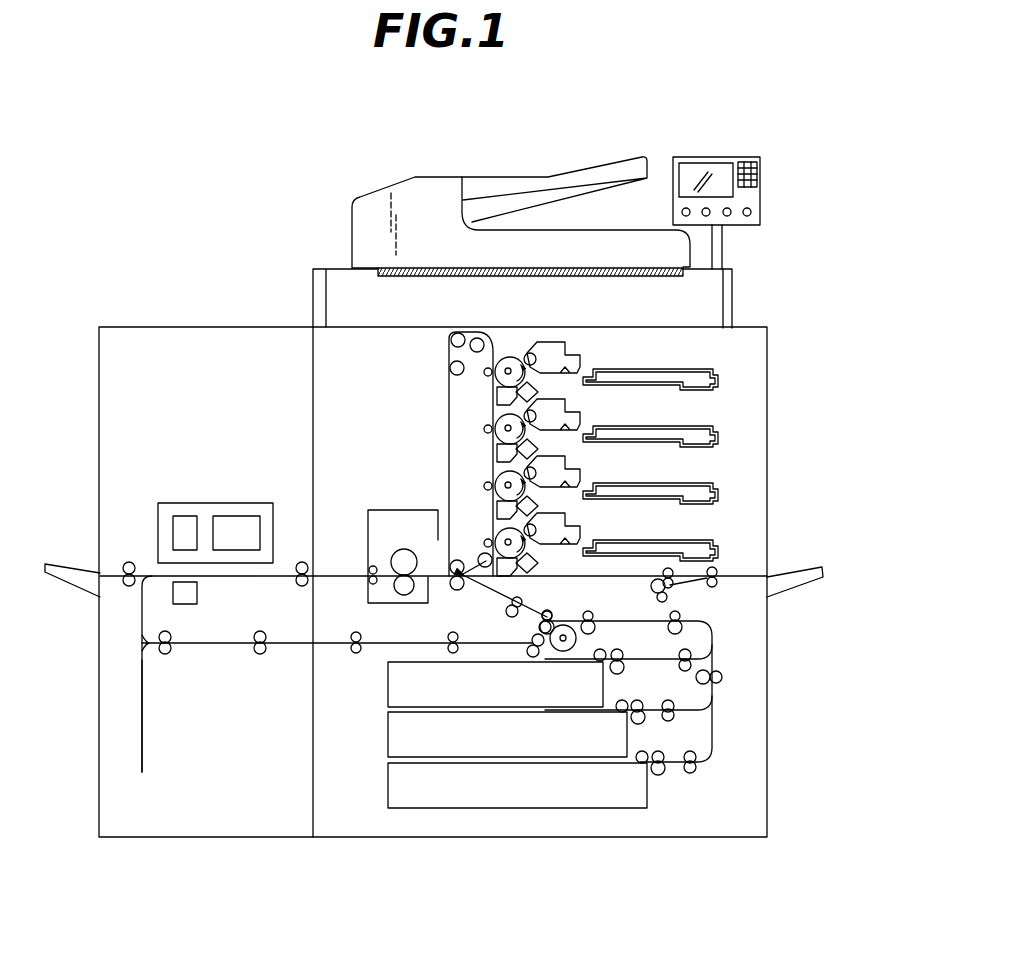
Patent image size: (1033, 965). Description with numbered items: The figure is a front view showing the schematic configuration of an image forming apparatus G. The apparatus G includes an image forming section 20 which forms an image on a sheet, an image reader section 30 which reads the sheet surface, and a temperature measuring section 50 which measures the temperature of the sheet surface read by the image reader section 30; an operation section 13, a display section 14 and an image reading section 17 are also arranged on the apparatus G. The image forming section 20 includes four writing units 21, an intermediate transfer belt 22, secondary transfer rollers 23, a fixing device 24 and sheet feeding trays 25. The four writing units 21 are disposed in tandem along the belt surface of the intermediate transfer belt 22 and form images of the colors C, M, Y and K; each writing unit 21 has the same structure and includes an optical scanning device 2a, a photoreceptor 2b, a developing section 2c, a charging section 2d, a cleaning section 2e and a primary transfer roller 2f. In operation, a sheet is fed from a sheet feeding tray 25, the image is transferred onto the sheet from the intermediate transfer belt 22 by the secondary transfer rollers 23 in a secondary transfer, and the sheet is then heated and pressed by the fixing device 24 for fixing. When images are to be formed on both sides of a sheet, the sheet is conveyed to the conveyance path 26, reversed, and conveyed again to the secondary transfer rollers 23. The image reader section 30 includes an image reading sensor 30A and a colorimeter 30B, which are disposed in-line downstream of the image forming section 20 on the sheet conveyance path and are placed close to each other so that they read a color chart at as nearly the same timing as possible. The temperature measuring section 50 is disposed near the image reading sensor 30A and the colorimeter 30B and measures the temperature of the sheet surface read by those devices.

The image forming apparatus G is at (612, 128).
The operation section 13 is at (762, 193).
The display section 14 is at (695, 172).
The image reading section 17 is at (350, 283).
The image forming section 20 is at (379, 392).
The writing unit 21 is at (740, 364).
The intermediate transfer belt 22 is at (448, 380).
The optical scanning device 2a is at (642, 369).
The photoreceptor 2b is at (507, 357).
The developing section 2c is at (583, 362).
The charging section 2d is at (532, 388).
The cleaning section 2e is at (497, 397).
The primary transfer roller 2f is at (488, 372).
The secondary transfer rollers 23 is at (453, 582).
The fixing device 24 is at (387, 508).
The sheet feeding tray 25 is at (466, 811).
The conveyance path 26 is at (163, 715).
The image reader section 30 is at (217, 503).
The image reading sensor 30A is at (245, 517).
The colorimeter 30B is at (185, 516).
The temperature measuring section 50 is at (198, 595).